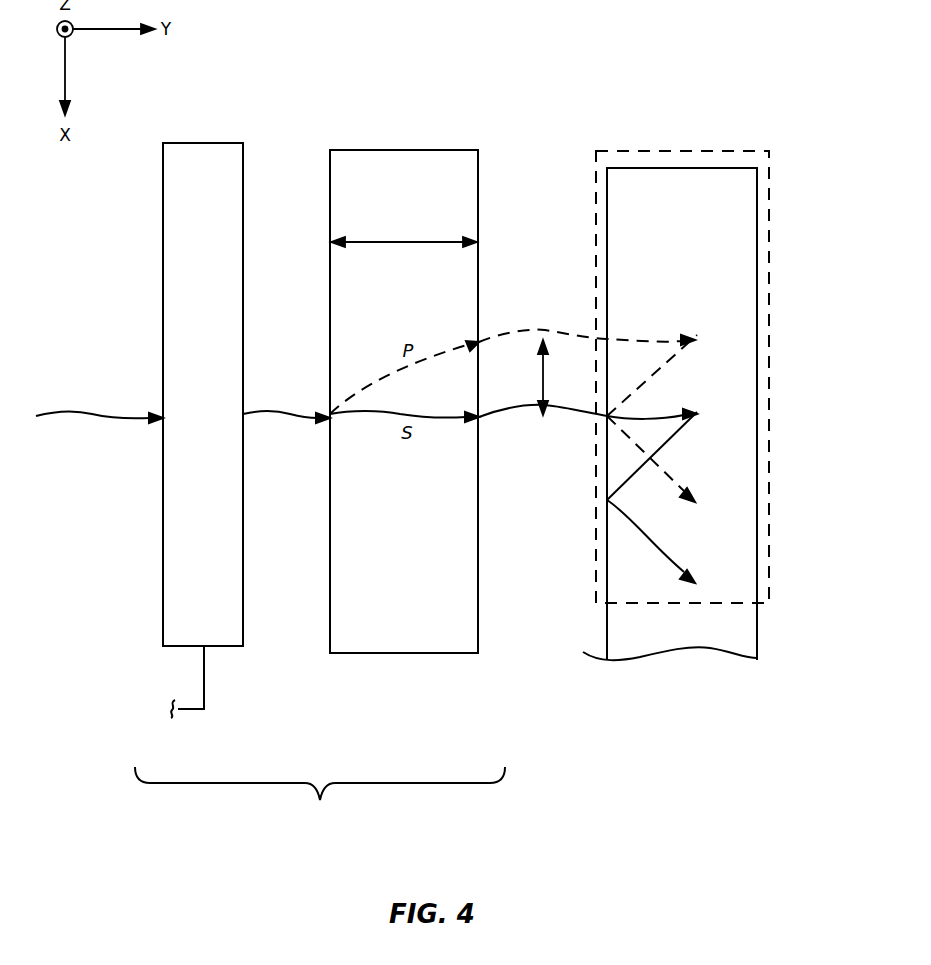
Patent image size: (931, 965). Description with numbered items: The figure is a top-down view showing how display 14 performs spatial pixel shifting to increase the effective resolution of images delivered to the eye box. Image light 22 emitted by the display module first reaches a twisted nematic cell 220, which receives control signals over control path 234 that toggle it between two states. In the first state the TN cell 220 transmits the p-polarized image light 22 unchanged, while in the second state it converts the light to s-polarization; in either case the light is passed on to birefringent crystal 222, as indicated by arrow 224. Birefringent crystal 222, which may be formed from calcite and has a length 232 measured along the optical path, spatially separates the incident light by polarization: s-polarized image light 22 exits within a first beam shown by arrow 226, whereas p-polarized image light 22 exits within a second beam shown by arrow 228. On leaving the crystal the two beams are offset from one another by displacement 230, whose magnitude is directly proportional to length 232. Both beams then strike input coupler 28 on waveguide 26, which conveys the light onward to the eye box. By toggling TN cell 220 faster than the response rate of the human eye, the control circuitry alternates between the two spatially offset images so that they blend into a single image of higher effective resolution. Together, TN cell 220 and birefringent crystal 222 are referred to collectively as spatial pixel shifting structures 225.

The near-eye display 14 is at (810, 688).
The image light 22 is at (57, 412).
The waveguide 26 is at (758, 622).
The input coupler 28 is at (704, 151).
The twisted nematic (TN) cell 220 is at (205, 143).
The birefringent crystal 222 is at (419, 150).
The arrow 224 is at (290, 412).
The spatial pixel shifting structures 225 is at (320, 800).
The arrow 226 is at (565, 418).
The arrow 228 is at (563, 334).
The displacement 230 is at (543, 378).
The length 232 is at (375, 240).
The control path 234 is at (185, 709).